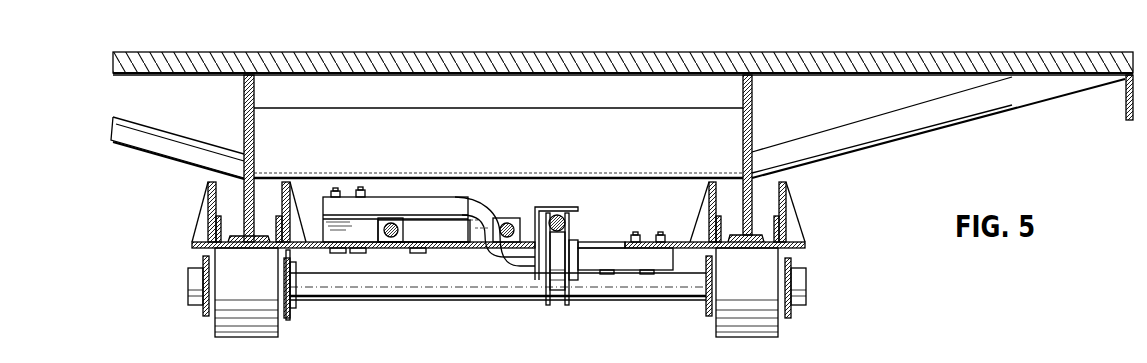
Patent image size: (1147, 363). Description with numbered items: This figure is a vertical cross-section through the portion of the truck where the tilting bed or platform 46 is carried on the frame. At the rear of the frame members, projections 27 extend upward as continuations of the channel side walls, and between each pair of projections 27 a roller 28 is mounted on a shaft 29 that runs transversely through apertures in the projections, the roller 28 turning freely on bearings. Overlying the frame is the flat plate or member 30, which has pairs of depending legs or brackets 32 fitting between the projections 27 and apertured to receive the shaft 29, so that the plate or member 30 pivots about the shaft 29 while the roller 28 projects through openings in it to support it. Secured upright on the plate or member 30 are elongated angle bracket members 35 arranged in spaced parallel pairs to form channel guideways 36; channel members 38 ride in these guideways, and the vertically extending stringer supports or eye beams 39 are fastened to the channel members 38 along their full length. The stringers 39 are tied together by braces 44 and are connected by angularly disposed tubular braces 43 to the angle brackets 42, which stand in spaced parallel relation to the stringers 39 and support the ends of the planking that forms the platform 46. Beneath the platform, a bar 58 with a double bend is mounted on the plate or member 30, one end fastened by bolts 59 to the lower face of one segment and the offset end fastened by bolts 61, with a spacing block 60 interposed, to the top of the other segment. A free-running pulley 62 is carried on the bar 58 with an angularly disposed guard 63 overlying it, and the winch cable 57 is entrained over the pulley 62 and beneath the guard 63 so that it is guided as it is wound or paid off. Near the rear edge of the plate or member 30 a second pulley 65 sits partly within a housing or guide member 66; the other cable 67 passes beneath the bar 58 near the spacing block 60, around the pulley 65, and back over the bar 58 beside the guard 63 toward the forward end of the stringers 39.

The projections 27 is at (290, 318).
The roller 28 is at (224, 326).
The shaft 29 is at (594, 300).
The plate or member 30 is at (194, 249).
The depending legs or brackets 32 is at (296, 305).
The angle bracket members 35 is at (208, 196).
The channel guideways 36 is at (786, 228).
The channel members 38 is at (216, 229).
The stringer supports or eye beams 39 is at (244, 110).
The angle brackets 42 is at (1126, 100).
The tubular braces 43 is at (976, 108).
The braces 44 is at (478, 108).
The bed or platform 46 is at (354, 51).
The cable 57 is at (567, 222).
The bar 58 is at (455, 200).
The bolts 59 is at (636, 235).
The spacing block 60 is at (326, 226).
The bolts 61 is at (368, 192).
The pulley 62 is at (548, 290).
The guard 63 is at (545, 208).
The pulley 65 is at (430, 243).
The housing or guide member 66 is at (500, 219).
The cable 67 is at (391, 240).